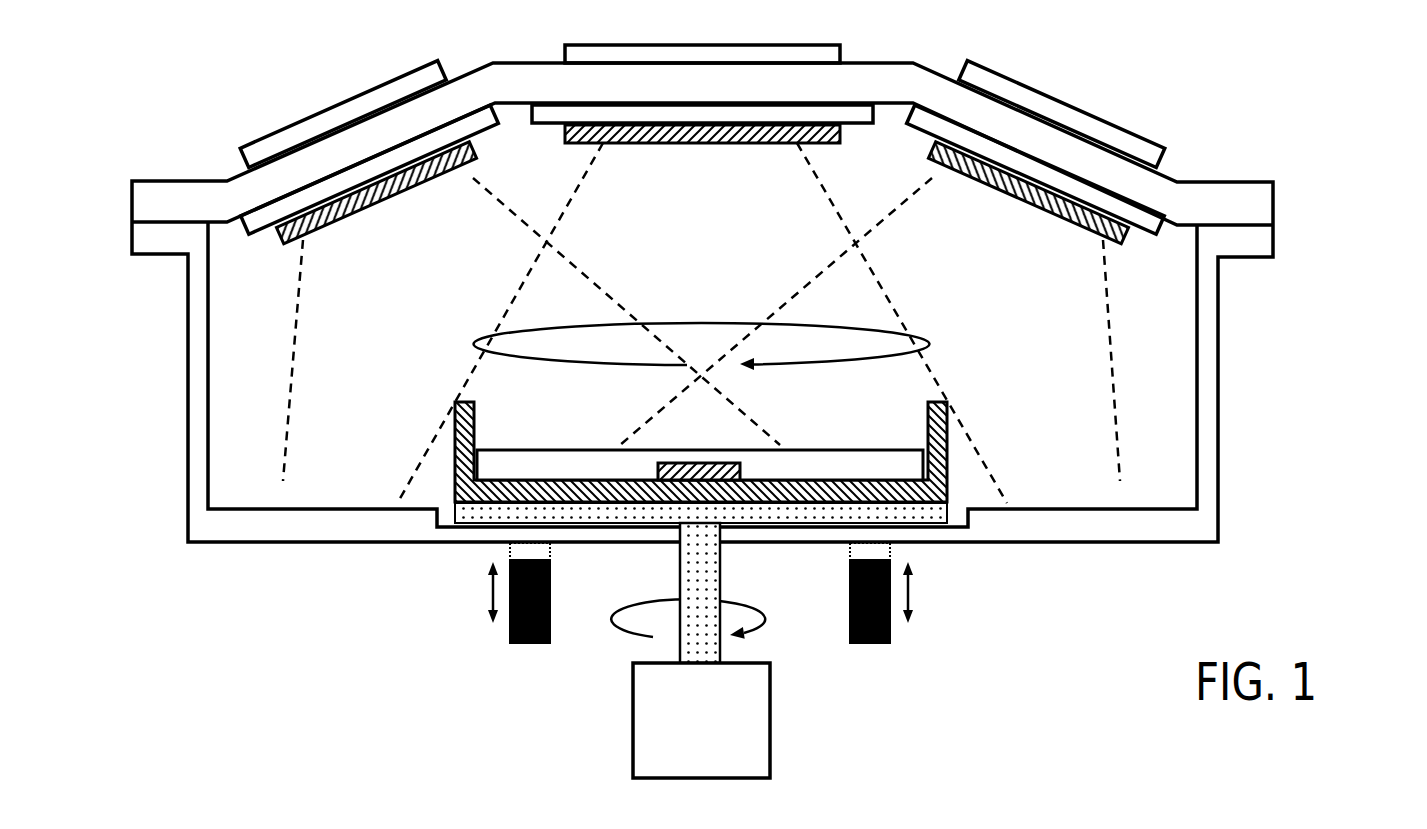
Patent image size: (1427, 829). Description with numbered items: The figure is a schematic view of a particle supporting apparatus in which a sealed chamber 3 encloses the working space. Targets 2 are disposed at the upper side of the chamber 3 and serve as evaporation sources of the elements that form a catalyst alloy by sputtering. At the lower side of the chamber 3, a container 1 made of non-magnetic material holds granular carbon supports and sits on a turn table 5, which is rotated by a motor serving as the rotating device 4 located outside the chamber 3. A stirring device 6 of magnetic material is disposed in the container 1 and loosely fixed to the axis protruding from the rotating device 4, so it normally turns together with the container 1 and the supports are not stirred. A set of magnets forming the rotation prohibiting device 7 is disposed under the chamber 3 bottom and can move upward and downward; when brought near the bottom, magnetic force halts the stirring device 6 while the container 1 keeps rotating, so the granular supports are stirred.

The container 1 is at (442, 421).
The targets 2 is at (895, 169).
The chamber 3 is at (1220, 328).
The rotating device 4 is at (690, 650).
The turn table 5 is at (965, 497).
The stirring device 6 is at (577, 439).
The rotation prohibiting device 7 is at (698, 627).